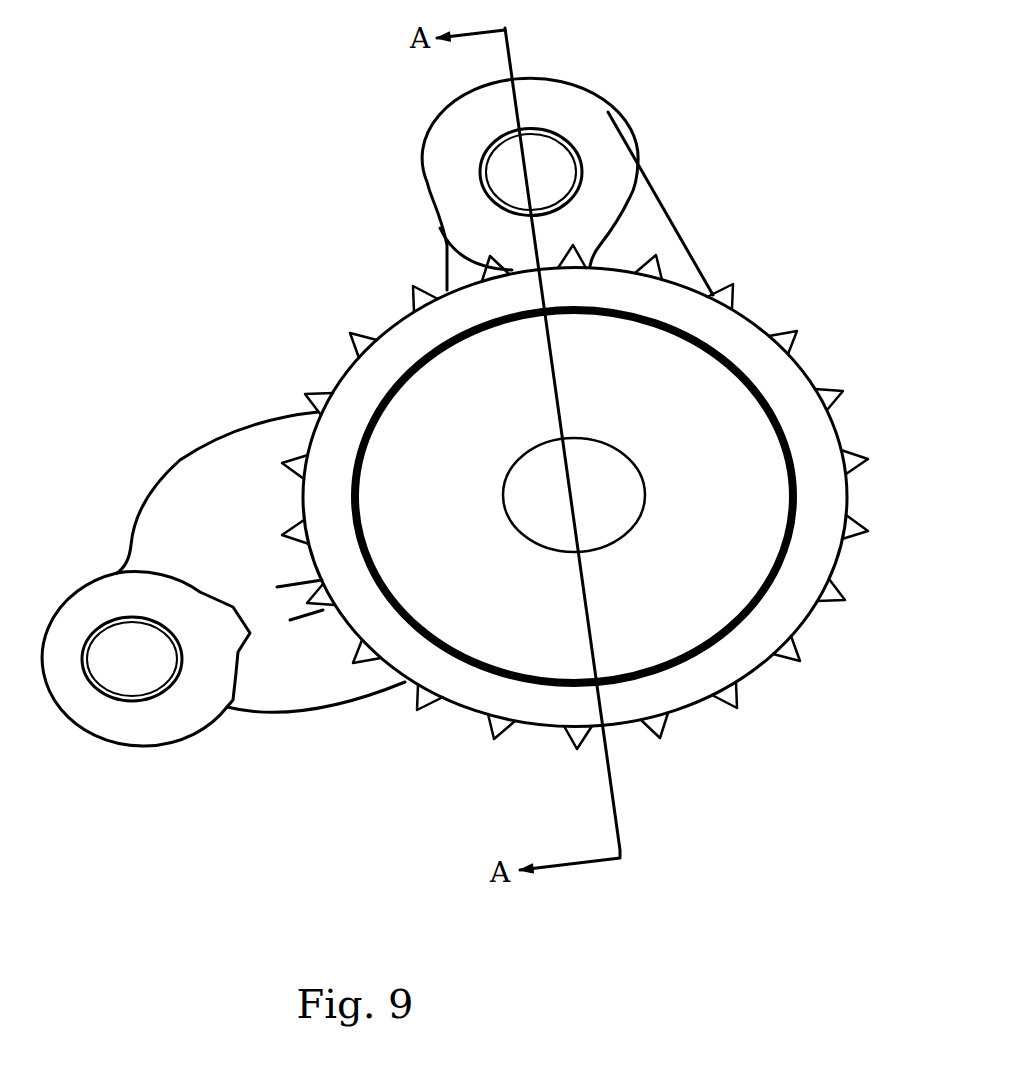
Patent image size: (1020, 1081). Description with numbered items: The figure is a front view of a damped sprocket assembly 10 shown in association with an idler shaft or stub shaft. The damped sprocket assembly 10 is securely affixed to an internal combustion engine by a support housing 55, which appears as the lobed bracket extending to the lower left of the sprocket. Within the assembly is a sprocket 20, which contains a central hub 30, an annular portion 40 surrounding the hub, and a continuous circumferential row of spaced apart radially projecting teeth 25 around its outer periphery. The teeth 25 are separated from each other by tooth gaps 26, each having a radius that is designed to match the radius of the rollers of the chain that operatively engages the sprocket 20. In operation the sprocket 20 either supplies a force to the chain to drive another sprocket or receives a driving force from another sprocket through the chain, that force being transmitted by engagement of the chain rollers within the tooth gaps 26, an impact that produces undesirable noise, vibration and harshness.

The damped sprocket assembly 10 is at (318, 352).
The sprocket 20 is at (790, 684).
The teeth 25 is at (490, 725).
The tooth gaps 26 is at (757, 308).
The hub 30 is at (700, 408).
The annular portion 40 is at (688, 680).
The support housing 55 is at (205, 502).